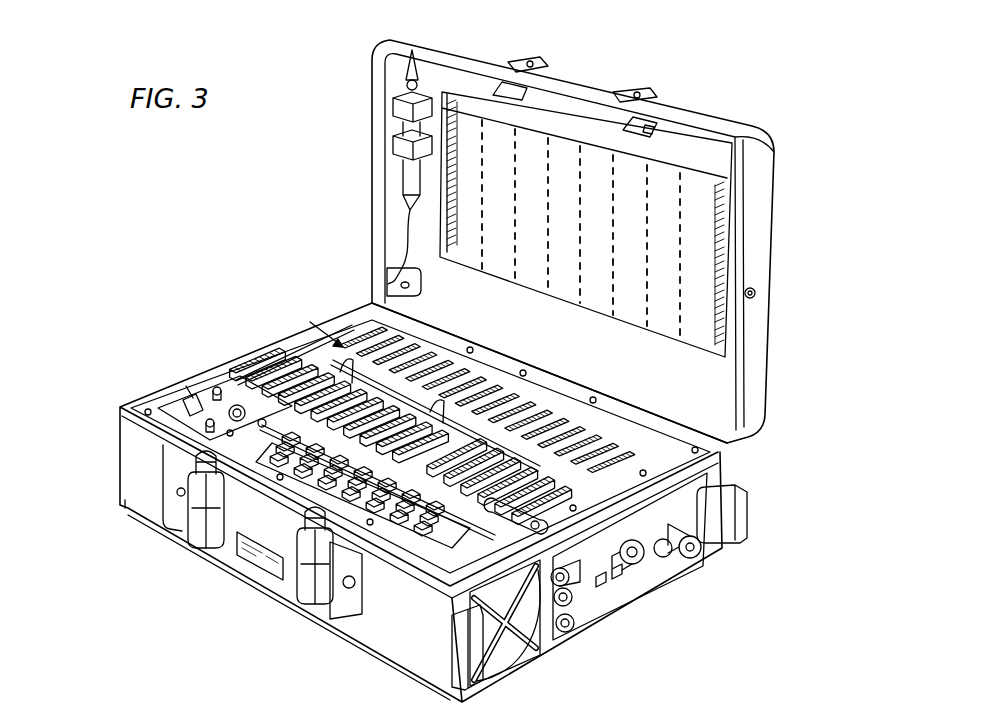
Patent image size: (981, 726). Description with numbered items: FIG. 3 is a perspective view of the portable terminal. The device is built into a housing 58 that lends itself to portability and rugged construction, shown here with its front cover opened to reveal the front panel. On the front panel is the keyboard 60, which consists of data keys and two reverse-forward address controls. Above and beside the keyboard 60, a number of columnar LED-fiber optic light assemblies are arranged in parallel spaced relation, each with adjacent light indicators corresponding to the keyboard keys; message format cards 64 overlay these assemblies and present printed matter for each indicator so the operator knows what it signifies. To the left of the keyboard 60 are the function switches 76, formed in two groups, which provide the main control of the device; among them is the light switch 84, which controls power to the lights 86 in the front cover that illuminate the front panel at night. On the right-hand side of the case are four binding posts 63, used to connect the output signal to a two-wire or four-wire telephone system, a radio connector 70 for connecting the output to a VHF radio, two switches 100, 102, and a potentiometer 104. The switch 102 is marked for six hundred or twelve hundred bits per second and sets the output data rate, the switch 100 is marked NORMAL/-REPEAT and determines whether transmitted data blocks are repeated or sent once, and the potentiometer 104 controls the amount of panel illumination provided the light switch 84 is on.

The housing 58 is at (311, 609).
The keyboard 60 is at (413, 527).
The binding posts 63 is at (582, 608).
The message format cards 64 is at (320, 360).
The radio connector 70 is at (638, 566).
The function switches 76 is at (170, 403).
The light switch 84 is at (202, 426).
The lights 86 is at (650, 137).
The switch 100 is at (604, 593).
The switch 102 is at (620, 580).
The potentiometer 104 is at (692, 551).